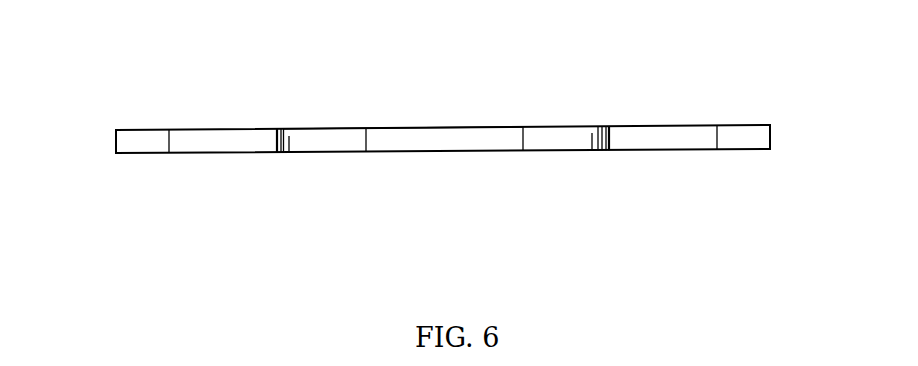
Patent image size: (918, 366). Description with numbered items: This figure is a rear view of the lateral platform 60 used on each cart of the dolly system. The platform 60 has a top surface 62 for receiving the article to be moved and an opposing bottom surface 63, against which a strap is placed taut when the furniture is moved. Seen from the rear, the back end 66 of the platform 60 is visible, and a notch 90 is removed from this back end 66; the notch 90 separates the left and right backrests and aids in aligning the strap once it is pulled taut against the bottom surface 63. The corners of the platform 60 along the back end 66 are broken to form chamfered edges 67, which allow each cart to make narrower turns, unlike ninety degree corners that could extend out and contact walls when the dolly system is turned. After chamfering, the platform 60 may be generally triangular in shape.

The platform 60 is at (180, 113).
The top surface 62 is at (260, 128).
The bottom surface 63 is at (312, 156).
The back end 66 is at (658, 143).
The chamfered edges 67 is at (130, 143).
The notch 90 is at (450, 139).